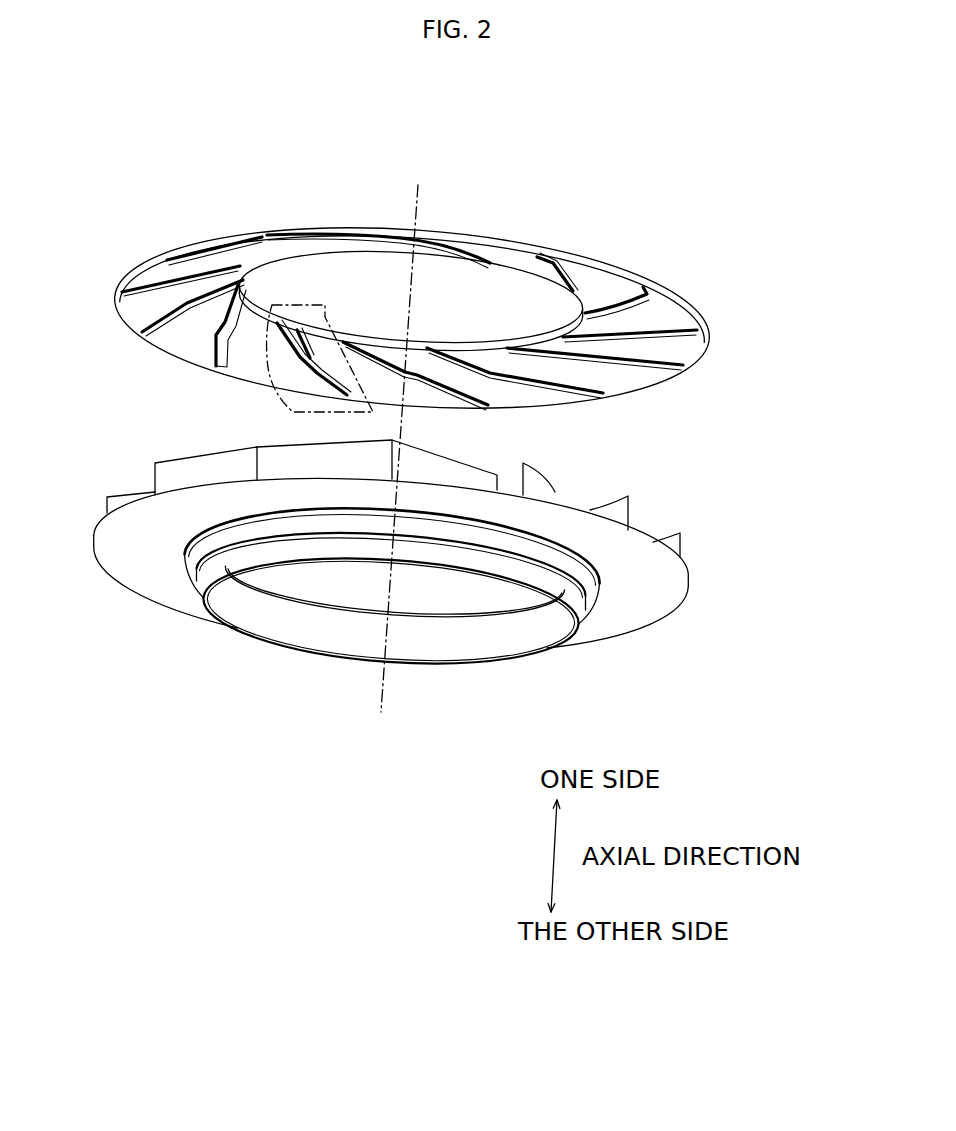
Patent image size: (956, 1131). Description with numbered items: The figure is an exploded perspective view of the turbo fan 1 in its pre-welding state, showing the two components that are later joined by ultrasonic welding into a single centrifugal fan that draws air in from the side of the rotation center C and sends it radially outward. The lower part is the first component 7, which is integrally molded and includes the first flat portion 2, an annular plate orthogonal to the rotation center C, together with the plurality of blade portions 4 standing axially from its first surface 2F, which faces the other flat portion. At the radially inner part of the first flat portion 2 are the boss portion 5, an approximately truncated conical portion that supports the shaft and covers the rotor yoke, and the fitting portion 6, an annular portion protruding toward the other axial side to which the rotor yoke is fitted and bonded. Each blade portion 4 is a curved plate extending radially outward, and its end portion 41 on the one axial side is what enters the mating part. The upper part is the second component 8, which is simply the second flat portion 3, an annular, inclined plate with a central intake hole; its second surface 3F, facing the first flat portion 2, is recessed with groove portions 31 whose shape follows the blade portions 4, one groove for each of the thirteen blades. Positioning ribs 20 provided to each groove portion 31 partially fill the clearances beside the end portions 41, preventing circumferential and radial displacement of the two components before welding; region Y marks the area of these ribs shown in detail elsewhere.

The turbo fan 1 is at (400, 321).
The first flat portion 2 is at (387, 556).
The first surface 2F is at (567, 507).
The second flat portion 3 is at (400, 308).
The second surface 3F is at (190, 340).
The blade portions 4 is at (393, 486).
The end portions 41 is at (407, 455).
The boss portion 5 is at (327, 592).
The fitting portion 6 is at (253, 637).
The first component 7 is at (128, 604).
The second component 8 is at (622, 261).
The positioning ribs 20 is at (312, 357).
The groove portions 31 is at (306, 360).
The rotation center C is at (406, 431).
The region Y is at (318, 412).